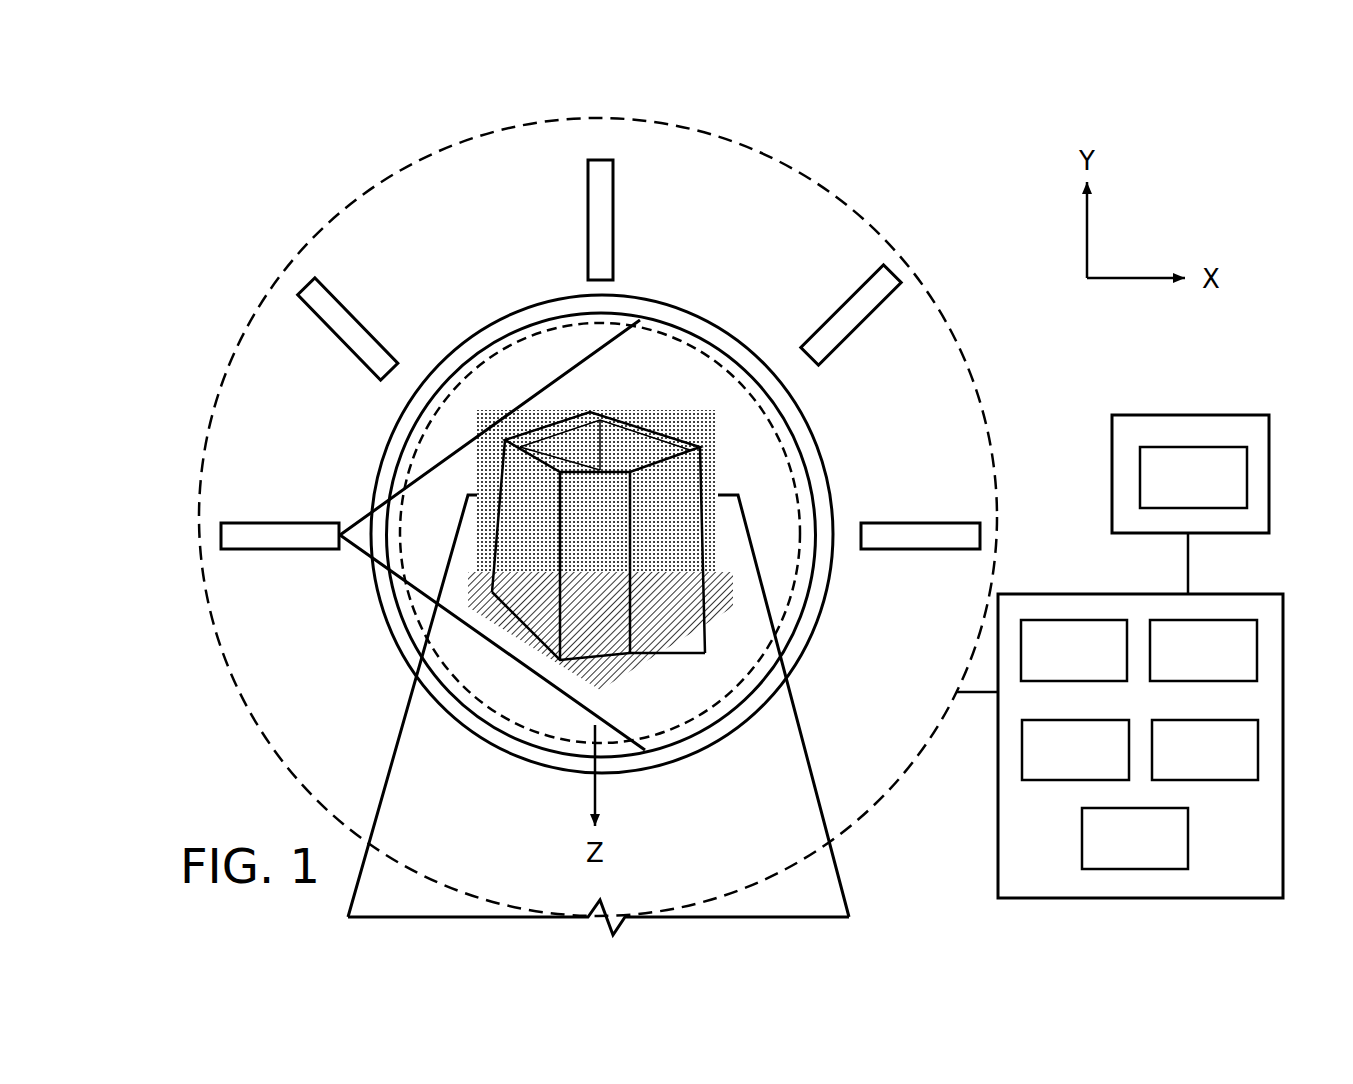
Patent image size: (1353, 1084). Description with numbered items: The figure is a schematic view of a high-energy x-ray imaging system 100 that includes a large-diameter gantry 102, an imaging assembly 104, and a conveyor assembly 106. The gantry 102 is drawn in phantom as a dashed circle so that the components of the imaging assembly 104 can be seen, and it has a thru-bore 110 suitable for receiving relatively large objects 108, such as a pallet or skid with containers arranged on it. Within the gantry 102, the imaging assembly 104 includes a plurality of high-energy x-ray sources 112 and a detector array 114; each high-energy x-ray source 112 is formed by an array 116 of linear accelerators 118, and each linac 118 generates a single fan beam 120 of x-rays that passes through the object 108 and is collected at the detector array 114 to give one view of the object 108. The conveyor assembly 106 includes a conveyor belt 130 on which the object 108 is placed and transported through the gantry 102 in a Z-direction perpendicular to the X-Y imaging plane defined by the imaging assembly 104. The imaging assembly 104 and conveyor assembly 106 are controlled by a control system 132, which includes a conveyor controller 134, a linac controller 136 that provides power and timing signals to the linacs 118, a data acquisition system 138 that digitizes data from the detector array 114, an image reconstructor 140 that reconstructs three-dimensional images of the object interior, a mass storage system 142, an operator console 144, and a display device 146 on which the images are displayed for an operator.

The high-energy x-ray imaging system 100 is at (906, 136).
The large-diameter gantry 102 is at (537, 116).
The imaging assembly 104 is at (939, 349).
The conveyor assembly 106 is at (816, 892).
The object 108 is at (631, 412).
The thru-bore 110 is at (790, 493).
The high-energy x-ray source 112 is at (378, 312).
The detector array 114 is at (808, 620).
The array of linear accelerators 116 is at (283, 563).
The linear accelerator 118 is at (613, 224).
The fan beam 120 is at (432, 463).
The conveyor belt 130 is at (385, 772).
The control system 132 is at (1100, 571).
The conveyor controller 134 is at (1050, 665).
The linac controller 136 is at (1179, 665).
The data acquisition system 138 is at (1052, 765).
The image reconstructor 140 is at (1181, 765).
The mass storage system 142 is at (1111, 853).
The operator console 144 is at (1132, 413).
The display device 146 is at (1169, 495).